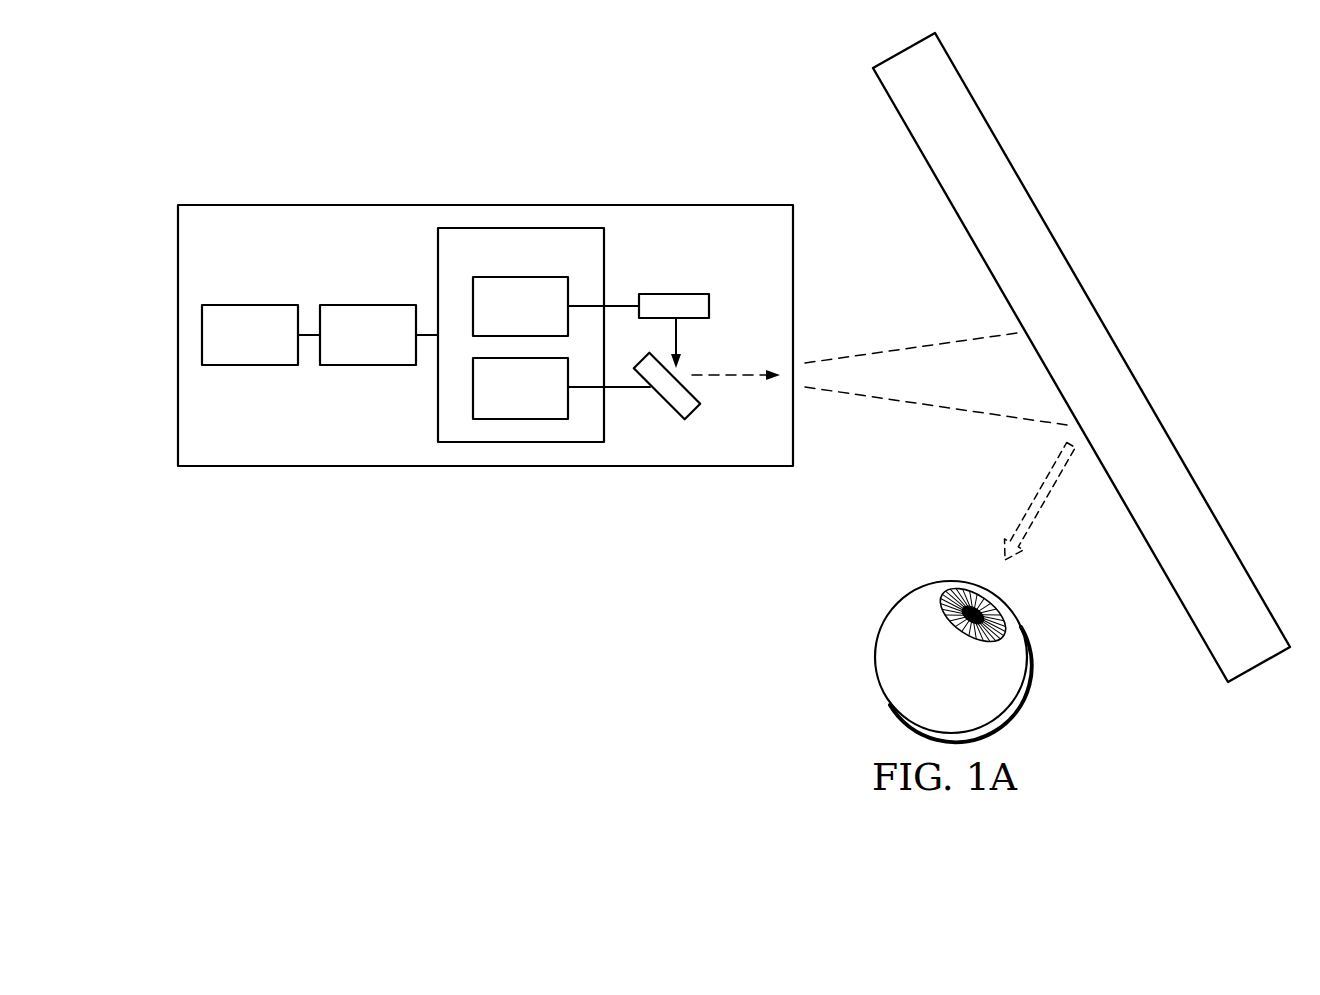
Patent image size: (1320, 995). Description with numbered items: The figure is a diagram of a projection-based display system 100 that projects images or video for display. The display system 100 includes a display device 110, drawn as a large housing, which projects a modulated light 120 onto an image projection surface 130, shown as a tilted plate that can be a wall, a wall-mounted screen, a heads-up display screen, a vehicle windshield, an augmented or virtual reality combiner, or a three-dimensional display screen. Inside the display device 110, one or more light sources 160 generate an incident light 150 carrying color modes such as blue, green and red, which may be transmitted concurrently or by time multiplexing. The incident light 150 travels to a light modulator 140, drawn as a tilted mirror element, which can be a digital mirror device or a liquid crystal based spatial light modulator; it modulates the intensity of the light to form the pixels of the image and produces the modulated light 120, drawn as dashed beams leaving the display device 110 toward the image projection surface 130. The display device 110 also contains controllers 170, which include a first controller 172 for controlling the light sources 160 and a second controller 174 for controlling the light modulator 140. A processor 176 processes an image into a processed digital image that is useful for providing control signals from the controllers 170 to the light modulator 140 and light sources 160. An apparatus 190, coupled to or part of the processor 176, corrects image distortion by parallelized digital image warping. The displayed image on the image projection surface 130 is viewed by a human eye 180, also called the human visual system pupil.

The display system 100 is at (288, 78).
The display device 110 is at (408, 195).
The modulated light 120 is at (727, 376).
The image projection surface 130 is at (1113, 342).
The light modulator 140 is at (668, 404).
The incident light 150 is at (677, 333).
The light sources 160 is at (686, 292).
The controllers 170 is at (431, 270).
The first controller 172 is at (545, 319).
The second controller 174 is at (545, 402).
The processor 176 is at (389, 349).
The human eye 180 is at (1028, 660).
The apparatus 190 is at (273, 349).